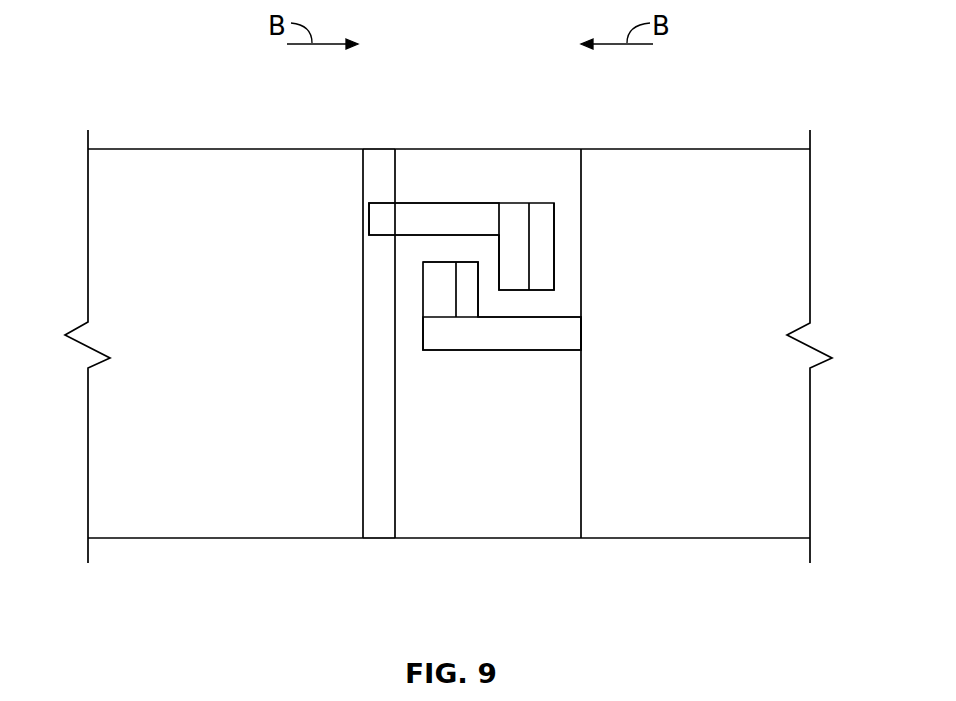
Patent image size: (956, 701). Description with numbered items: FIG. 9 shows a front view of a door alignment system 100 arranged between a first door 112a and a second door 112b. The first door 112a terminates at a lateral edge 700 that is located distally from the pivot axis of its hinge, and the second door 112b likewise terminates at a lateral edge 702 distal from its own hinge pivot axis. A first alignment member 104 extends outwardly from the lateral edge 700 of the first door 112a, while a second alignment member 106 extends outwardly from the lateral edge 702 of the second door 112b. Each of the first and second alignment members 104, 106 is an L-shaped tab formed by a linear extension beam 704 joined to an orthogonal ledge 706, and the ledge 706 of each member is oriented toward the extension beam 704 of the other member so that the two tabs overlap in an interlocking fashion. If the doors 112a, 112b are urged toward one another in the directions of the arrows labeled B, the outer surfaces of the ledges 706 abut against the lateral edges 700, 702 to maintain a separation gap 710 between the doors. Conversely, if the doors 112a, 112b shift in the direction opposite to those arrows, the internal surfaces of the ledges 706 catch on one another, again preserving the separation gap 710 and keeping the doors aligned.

The door alignment system 100 is at (503, 160).
The first alignment member 104 is at (424, 213).
The second alignment member 106 is at (470, 345).
The first door 112a is at (136, 163).
The second door 112b is at (756, 173).
The lateral edge 700 is at (377, 512).
The lateral edge 702 is at (580, 500).
The linear extension beam 704 is at (406, 210).
The orthogonal ledge 706 is at (509, 252).
The separation gap 710 is at (487, 580).